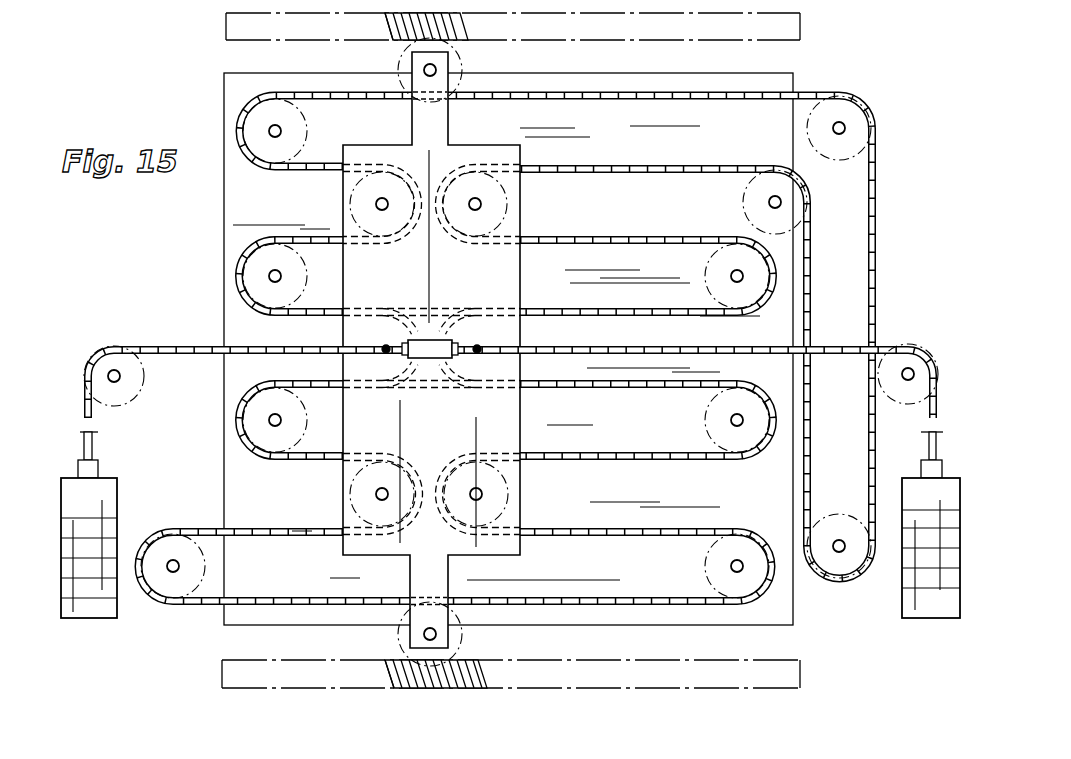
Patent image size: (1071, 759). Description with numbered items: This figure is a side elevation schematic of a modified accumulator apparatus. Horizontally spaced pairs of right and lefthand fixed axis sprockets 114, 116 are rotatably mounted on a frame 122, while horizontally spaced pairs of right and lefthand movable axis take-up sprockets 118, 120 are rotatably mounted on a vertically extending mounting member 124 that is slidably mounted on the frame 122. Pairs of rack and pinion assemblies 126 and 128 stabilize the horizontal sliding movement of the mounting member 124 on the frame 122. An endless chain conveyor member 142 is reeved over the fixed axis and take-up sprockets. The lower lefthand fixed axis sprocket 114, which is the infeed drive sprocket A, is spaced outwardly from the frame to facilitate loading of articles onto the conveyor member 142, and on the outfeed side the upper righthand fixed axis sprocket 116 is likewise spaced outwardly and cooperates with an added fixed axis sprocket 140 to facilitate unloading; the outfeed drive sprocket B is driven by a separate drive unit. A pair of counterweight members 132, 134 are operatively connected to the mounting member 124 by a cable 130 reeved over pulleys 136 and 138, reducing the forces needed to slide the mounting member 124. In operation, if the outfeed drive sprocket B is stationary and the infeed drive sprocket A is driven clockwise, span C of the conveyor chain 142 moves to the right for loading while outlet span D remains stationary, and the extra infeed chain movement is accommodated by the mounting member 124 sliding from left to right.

The lefthand fixed axis sprockets 114 is at (300, 127).
The righthand fixed axis sprockets 116 is at (790, 186).
The lefthand movable axis take-up sprockets 118 is at (347, 198).
The righthand movable axis take-up sprockets 120 is at (498, 236).
The frame 122 is at (664, 112).
The mounting member 124 is at (418, 280).
The rack and pinion assemblies 126 is at (462, 64).
The rack and pinion assemblies 128 is at (392, 37).
The cable 130 is at (182, 335).
The counterweight member 132 is at (108, 512).
The counterweight member 134 is at (905, 592).
The pulley 136 is at (128, 383).
The pulley 138 is at (903, 357).
The added fixed axis sprocket 140 is at (845, 512).
The endless chain conveyor member 142 is at (300, 533).
The infeed drive sprocket A is at (193, 543).
The outfeed drive sprocket B is at (707, 555).
The span C is at (263, 528).
The outlet span D is at (878, 213).